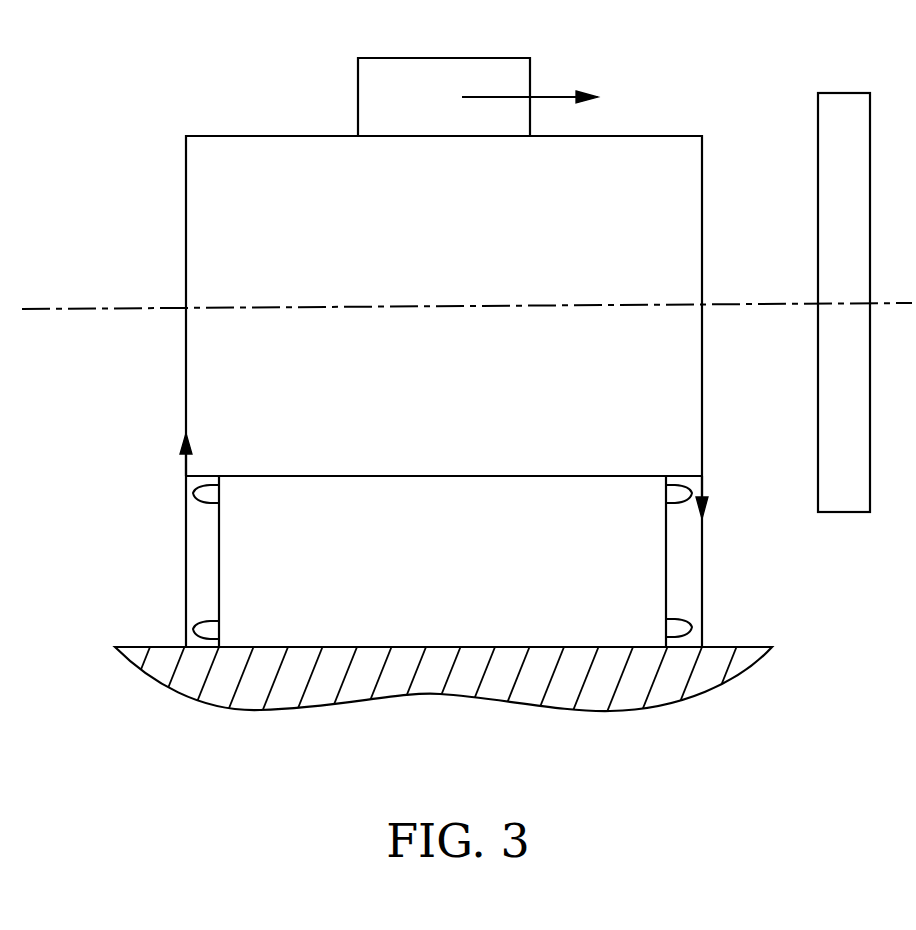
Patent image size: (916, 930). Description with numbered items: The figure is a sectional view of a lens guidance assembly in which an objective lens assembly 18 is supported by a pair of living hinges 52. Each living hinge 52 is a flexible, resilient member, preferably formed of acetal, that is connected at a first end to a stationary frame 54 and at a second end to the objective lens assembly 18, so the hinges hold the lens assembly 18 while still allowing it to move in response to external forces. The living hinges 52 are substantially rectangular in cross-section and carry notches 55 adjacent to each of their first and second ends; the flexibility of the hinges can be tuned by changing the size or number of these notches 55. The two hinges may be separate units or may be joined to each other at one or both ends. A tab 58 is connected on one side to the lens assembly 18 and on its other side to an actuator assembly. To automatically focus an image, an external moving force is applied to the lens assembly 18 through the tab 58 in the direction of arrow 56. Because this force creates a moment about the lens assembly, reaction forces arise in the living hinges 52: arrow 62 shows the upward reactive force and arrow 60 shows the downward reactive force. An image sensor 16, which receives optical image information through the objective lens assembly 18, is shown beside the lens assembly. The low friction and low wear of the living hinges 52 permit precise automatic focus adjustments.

The image sensor 16 is at (852, 93).
The objective lens assembly 18 is at (685, 241).
The living hinges 52 is at (666, 552).
The stationary frame 54 is at (678, 677).
The notches 55 is at (222, 497).
The arrow 56 is at (537, 90).
The tab 58 is at (387, 70).
The arrow 60 is at (706, 494).
The arrow 62 is at (181, 441).